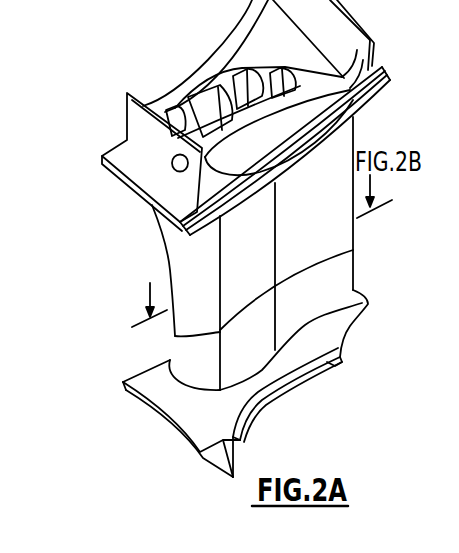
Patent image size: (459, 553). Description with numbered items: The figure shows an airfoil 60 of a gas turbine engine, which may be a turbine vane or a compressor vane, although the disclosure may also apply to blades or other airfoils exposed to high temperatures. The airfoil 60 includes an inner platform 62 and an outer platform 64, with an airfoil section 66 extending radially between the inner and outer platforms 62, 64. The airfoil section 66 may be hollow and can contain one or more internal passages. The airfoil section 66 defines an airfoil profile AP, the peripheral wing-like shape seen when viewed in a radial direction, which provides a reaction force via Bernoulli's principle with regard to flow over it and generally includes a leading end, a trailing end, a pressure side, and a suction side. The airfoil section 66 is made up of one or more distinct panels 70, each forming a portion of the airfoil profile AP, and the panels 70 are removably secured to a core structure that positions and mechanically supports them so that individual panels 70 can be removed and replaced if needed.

The airfoil 60 is at (98, 336).
The inner platform 62 is at (203, 456).
The outer platform 64 is at (384, 64).
The airfoil section 66 is at (168, 263).
The panels 70 is at (228, 358).
The airfoil profile AP is at (190, 329).